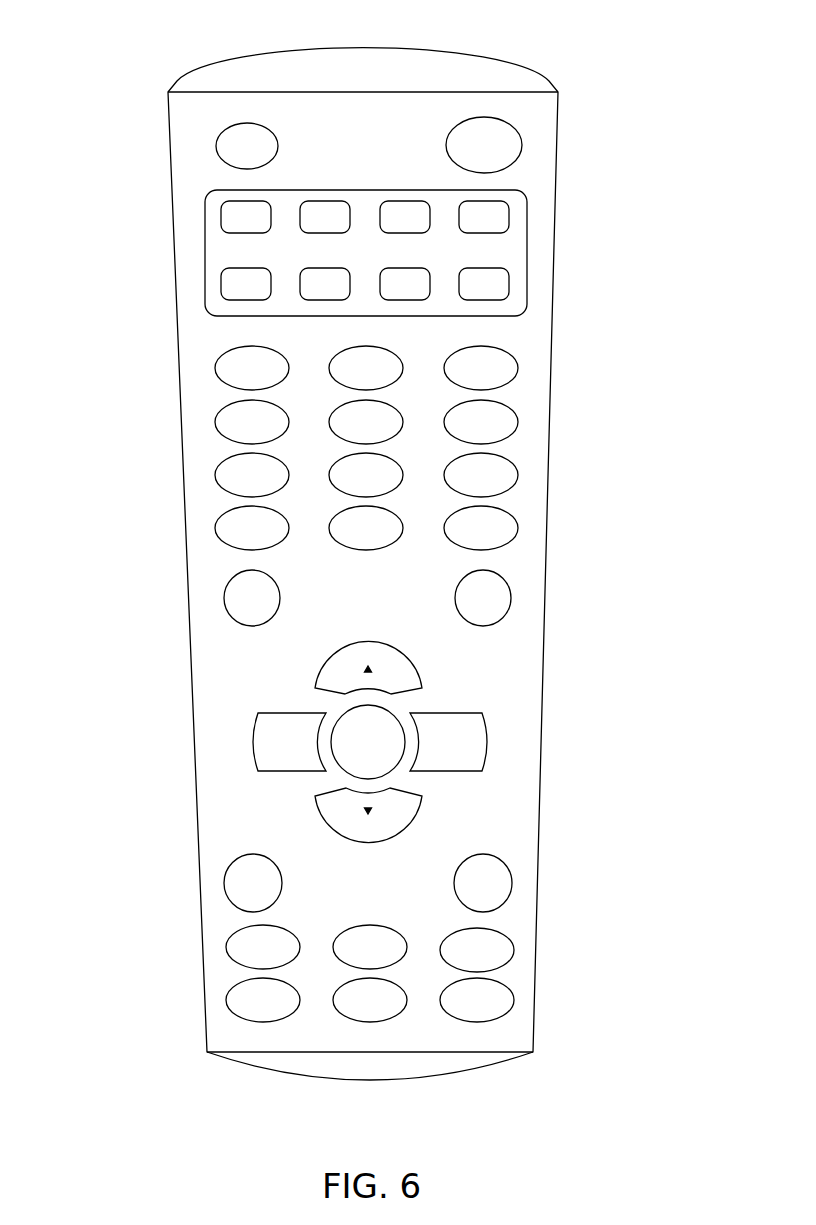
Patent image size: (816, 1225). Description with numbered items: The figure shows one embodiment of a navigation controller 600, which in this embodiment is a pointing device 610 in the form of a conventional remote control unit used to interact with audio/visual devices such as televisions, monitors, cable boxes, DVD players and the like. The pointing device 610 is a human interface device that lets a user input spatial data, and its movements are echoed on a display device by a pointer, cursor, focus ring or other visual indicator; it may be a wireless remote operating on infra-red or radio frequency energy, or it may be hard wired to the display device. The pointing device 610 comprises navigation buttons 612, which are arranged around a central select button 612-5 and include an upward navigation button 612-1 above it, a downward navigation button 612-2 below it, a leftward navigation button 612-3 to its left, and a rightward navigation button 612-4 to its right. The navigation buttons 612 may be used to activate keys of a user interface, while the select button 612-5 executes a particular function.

The navigation controller 600 is at (368, 543).
The pointing device 610 is at (553, 297).
The navigation buttons 612 is at (283, 743).
The upward navigation button 612-1 is at (416, 667).
The downward navigation button 612-2 is at (330, 823).
The leftward navigation button 612-3 is at (280, 712).
The rightward navigation button 612-4 is at (452, 772).
The select button 612-5 is at (397, 714).